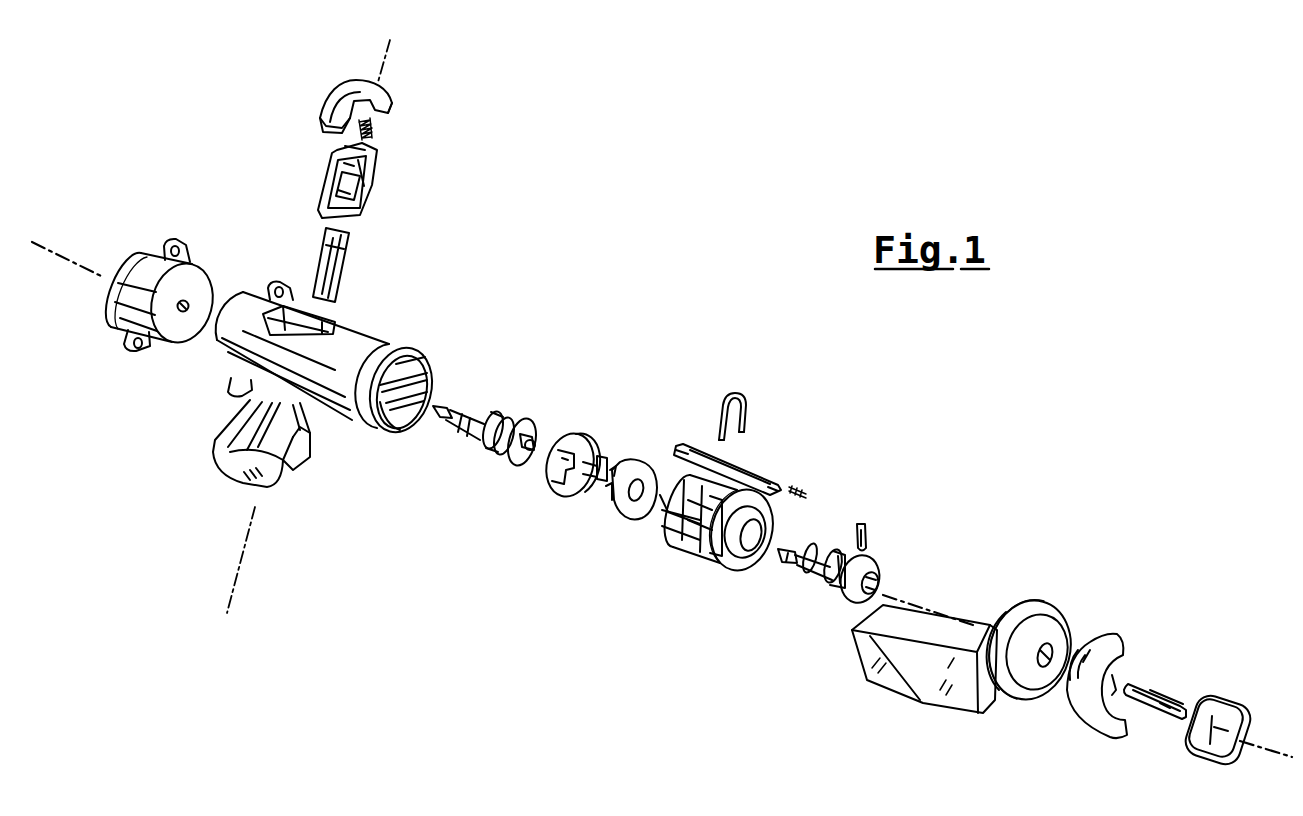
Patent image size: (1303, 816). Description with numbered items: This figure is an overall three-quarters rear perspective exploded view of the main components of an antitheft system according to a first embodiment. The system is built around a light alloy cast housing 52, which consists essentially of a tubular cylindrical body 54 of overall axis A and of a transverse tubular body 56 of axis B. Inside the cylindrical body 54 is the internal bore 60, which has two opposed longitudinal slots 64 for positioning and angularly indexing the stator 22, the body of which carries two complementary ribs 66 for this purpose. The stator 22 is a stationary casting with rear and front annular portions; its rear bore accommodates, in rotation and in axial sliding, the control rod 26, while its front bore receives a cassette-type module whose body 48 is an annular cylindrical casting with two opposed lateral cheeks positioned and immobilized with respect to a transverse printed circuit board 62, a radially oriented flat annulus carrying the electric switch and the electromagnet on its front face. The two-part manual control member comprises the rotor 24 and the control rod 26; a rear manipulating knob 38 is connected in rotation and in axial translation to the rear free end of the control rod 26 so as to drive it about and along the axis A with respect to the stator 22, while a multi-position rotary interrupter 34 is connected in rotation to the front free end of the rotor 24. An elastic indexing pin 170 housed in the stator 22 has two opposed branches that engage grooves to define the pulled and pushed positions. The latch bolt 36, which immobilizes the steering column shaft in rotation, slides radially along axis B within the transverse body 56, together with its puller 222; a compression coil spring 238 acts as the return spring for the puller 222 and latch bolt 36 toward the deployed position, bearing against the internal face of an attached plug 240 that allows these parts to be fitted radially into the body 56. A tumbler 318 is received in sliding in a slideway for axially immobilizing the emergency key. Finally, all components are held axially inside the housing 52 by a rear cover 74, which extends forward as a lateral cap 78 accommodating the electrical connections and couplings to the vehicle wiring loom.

The stator 22 is at (732, 576).
The rotor 24 is at (495, 407).
The control rod 26 is at (893, 561).
The multi-position rotary interrupter 34 is at (147, 232).
The latch bolt 36 is at (356, 268).
The rear manipulating knob 38 is at (1140, 637).
The body of the cassette 48 is at (537, 483).
The housing 52 is at (402, 332).
The tubular cylindrical body 54 is at (337, 417).
The transverse body 56 is at (327, 427).
The internal bore 60 is at (402, 418).
The printed circuit board 62 is at (638, 512).
The longitudinal slots 64 is at (432, 403).
The complementary ribs 66 is at (673, 520).
The rear cover 74 is at (1030, 600).
The lateral cap 78 is at (867, 688).
The elastic indexing pin 170 is at (755, 389).
The puller 222 is at (382, 184).
The compression coil spring 238 is at (380, 135).
The attached plug 240 is at (326, 94).
The tumbler 318 is at (864, 514).